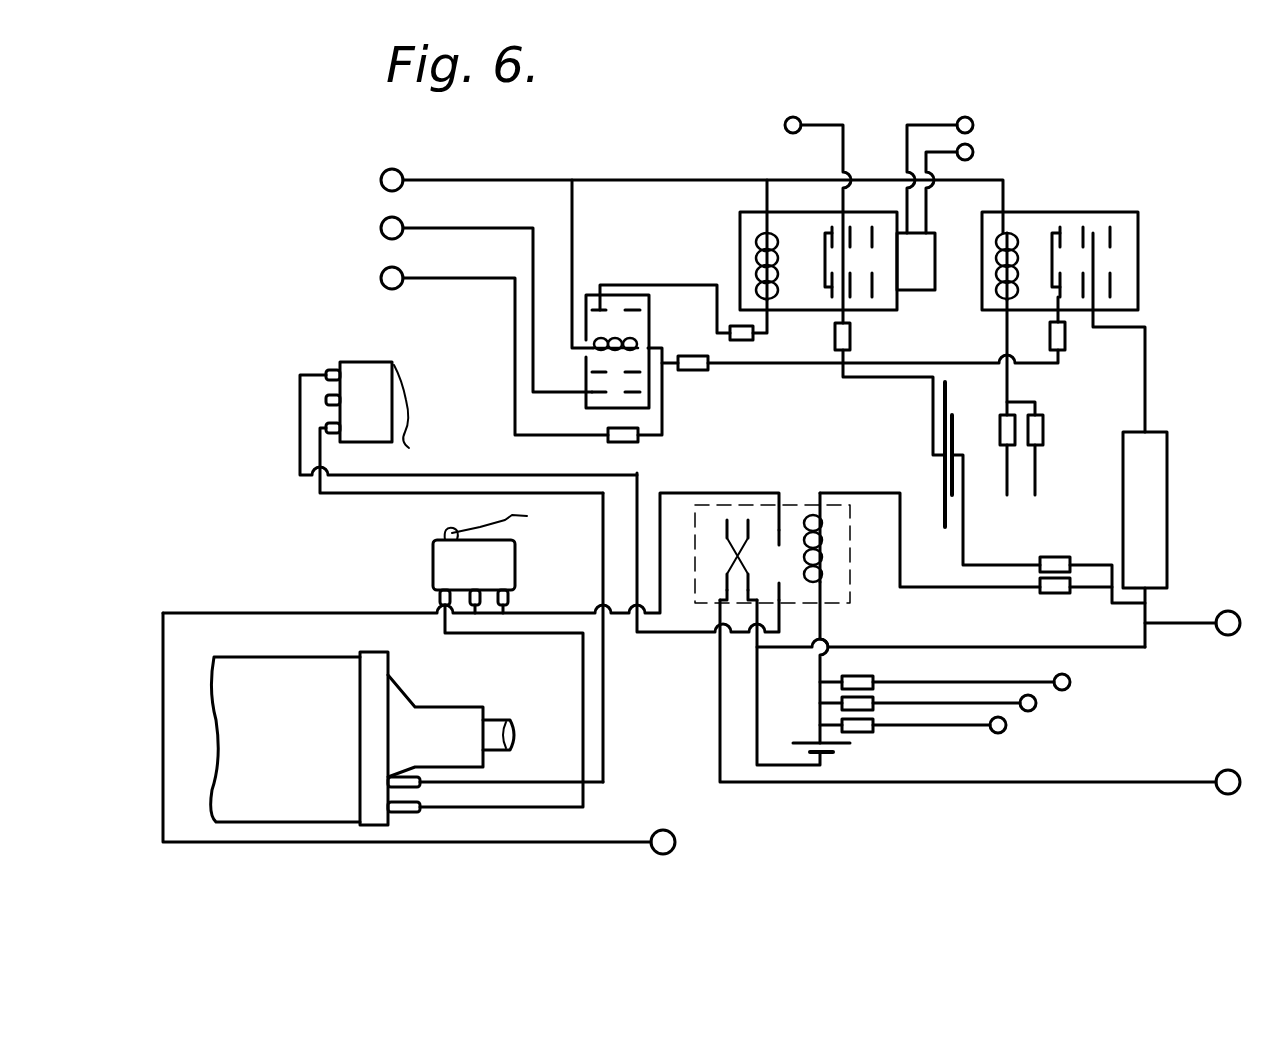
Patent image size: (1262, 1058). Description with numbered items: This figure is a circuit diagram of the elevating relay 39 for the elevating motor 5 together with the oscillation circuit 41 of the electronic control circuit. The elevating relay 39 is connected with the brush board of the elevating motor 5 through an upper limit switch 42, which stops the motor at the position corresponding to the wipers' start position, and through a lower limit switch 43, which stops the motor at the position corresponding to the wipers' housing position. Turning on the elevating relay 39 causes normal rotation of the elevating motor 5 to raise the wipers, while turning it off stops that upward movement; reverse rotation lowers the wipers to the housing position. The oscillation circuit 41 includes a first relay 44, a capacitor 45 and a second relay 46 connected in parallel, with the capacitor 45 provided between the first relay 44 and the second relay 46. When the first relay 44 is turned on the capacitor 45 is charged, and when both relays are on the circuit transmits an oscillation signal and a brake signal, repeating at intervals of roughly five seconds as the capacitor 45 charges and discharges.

The elevating motor 5 is at (268, 808).
The elevating relay 39 is at (697, 603).
The oscillation circuit 41 is at (650, 171).
The upper limit switch 42 is at (433, 562).
The lower limit switch 43 is at (366, 360).
The first relay 44 is at (590, 293).
The capacitor 45 is at (943, 470).
The second relay 46 is at (740, 245).